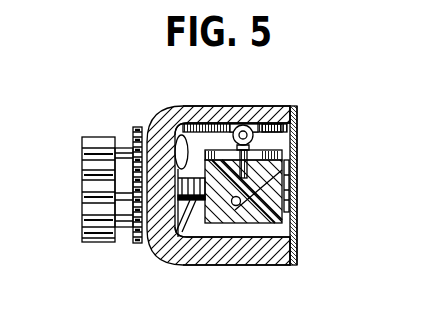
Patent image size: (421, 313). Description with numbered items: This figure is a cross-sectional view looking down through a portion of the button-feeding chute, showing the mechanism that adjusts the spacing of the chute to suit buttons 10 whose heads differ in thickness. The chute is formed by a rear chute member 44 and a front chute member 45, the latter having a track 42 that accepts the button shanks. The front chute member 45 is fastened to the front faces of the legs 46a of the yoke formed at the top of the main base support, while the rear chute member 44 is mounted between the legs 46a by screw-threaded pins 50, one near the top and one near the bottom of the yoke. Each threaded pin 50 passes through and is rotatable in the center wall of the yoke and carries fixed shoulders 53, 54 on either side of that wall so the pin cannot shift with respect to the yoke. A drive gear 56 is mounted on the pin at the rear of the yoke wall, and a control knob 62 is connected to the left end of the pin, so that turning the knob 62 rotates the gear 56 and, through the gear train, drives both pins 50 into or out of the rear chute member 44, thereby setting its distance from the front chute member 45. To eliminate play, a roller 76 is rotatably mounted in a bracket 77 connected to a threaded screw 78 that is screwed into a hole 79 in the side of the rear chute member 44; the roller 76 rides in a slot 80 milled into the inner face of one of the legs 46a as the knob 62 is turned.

The headed button 10 is at (297, 178).
The track 42 is at (288, 187).
The rear chute member 44 is at (253, 224).
The front chute member 45 is at (298, 124).
The yoke legs 46a is at (241, 106).
The threaded pin 50 is at (164, 256).
The fixed shoulder 53 is at (176, 135).
The fixed shoulder 54 is at (133, 178).
The drive gear 56 is at (136, 127).
The control knob 62 is at (102, 150).
The roller 76 is at (247, 126).
The bracket 77 is at (284, 122).
The threaded screw 78 is at (272, 155).
The hole 79 is at (227, 206).
The slot 80 is at (210, 126).